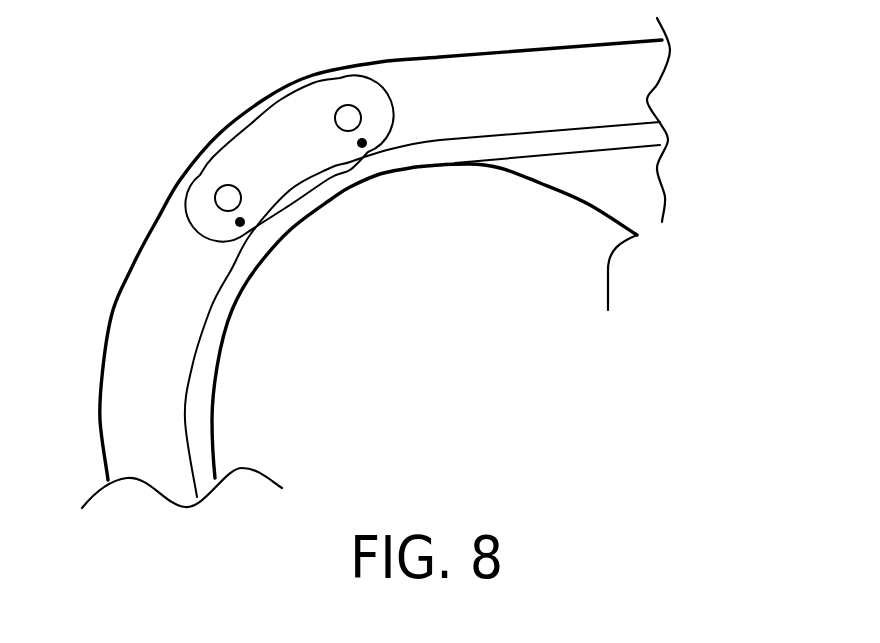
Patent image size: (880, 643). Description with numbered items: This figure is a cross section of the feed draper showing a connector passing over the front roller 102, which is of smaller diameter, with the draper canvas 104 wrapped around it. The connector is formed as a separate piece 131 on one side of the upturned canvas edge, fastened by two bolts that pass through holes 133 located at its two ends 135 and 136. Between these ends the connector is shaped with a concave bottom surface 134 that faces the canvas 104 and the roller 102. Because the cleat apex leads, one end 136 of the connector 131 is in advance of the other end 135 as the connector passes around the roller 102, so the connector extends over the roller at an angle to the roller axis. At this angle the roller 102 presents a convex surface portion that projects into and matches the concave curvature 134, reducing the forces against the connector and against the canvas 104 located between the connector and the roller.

The front roller 102 is at (600, 208).
The draper canvas 104 is at (611, 151).
The separate piece 131 is at (288, 162).
The holes 133 is at (228, 198).
The concave bottom surface 134 is at (307, 184).
The end 135 is at (240, 222).
The end 136 is at (362, 143).